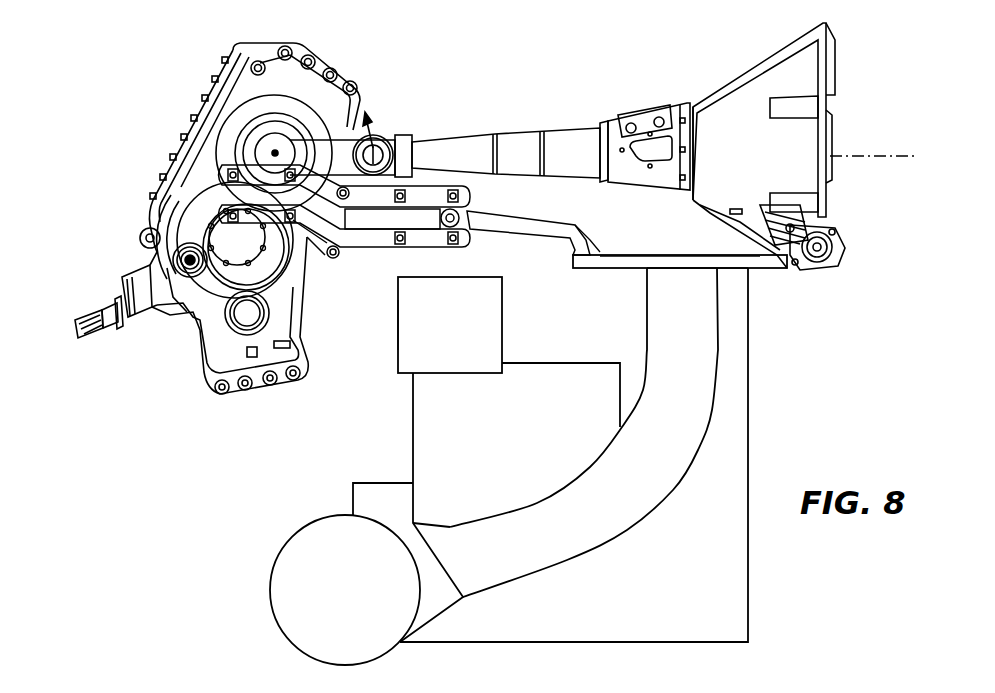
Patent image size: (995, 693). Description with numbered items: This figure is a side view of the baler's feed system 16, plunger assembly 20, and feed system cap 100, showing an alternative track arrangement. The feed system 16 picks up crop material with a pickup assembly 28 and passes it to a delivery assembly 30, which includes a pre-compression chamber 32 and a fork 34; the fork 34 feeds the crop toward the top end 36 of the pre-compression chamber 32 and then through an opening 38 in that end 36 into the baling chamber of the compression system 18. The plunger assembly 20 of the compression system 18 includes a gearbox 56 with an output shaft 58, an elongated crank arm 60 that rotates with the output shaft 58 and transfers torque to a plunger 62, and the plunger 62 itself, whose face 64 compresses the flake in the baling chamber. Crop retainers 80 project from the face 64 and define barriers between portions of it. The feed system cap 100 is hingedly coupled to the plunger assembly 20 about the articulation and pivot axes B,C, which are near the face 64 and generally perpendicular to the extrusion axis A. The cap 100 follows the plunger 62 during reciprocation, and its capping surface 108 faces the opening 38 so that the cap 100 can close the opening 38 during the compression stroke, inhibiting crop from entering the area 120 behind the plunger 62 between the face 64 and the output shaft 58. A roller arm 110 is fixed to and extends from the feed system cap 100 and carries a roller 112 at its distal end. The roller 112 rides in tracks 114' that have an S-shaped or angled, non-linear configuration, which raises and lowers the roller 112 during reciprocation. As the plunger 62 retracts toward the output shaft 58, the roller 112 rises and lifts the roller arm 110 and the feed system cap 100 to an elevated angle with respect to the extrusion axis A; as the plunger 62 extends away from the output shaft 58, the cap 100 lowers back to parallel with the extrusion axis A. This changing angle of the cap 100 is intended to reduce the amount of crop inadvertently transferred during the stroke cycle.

The feed system 16 is at (752, 462).
The compression system 18 is at (184, 63).
The plunger assembly 20 is at (636, 93).
The pickup assembly 28 is at (289, 518).
The delivery assembly 30 is at (620, 546).
The pre-compression chamber 32 is at (660, 494).
The fork 34 is at (388, 358).
The end 36 is at (720, 279).
The opening 38 is at (686, 272).
The gearbox 56 is at (253, 92).
The output shaft 58 is at (257, 118).
The crank arm 60 is at (307, 137).
The plunger 62 is at (757, 58).
The face 64 is at (828, 111).
The crop retainers 80 is at (822, 200).
The feed system cap 100 is at (592, 272).
The capping surface 108 is at (628, 268).
The roller arm 110 is at (506, 227).
The roller 112 is at (478, 222).
The tracks 114' is at (345, 241).
The area 120 is at (646, 229).
The extrusion axis A is at (890, 153).
The pivot axis and articulation axis B,C is at (838, 244).